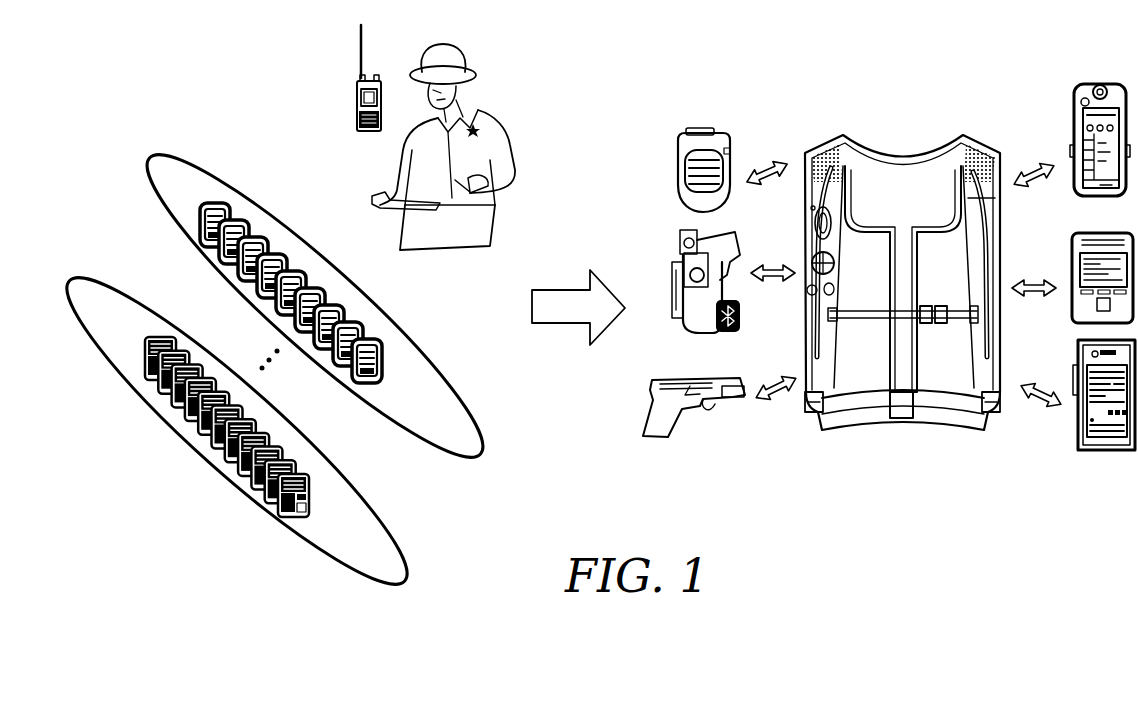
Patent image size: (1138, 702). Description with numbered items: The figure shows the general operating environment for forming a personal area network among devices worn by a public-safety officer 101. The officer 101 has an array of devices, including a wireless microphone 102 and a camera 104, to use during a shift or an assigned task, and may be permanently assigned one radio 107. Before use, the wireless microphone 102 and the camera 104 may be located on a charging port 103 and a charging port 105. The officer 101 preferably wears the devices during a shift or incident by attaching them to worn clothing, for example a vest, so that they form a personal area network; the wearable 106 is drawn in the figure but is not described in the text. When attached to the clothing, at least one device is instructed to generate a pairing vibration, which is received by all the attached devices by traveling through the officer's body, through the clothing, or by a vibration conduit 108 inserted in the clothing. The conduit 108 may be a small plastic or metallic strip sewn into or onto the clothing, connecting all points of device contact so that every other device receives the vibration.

The law enforcement officer 101 is at (496, 122).
The mobile devices 102 is at (397, 368).
The group of mobile devices 103 is at (481, 432).
The portable devices 104 is at (336, 507).
The group of portable devices 105 is at (404, 565).
The wearable system 106 is at (840, 142).
The portable radio 107 is at (360, 68).
The vest 108 is at (923, 210).